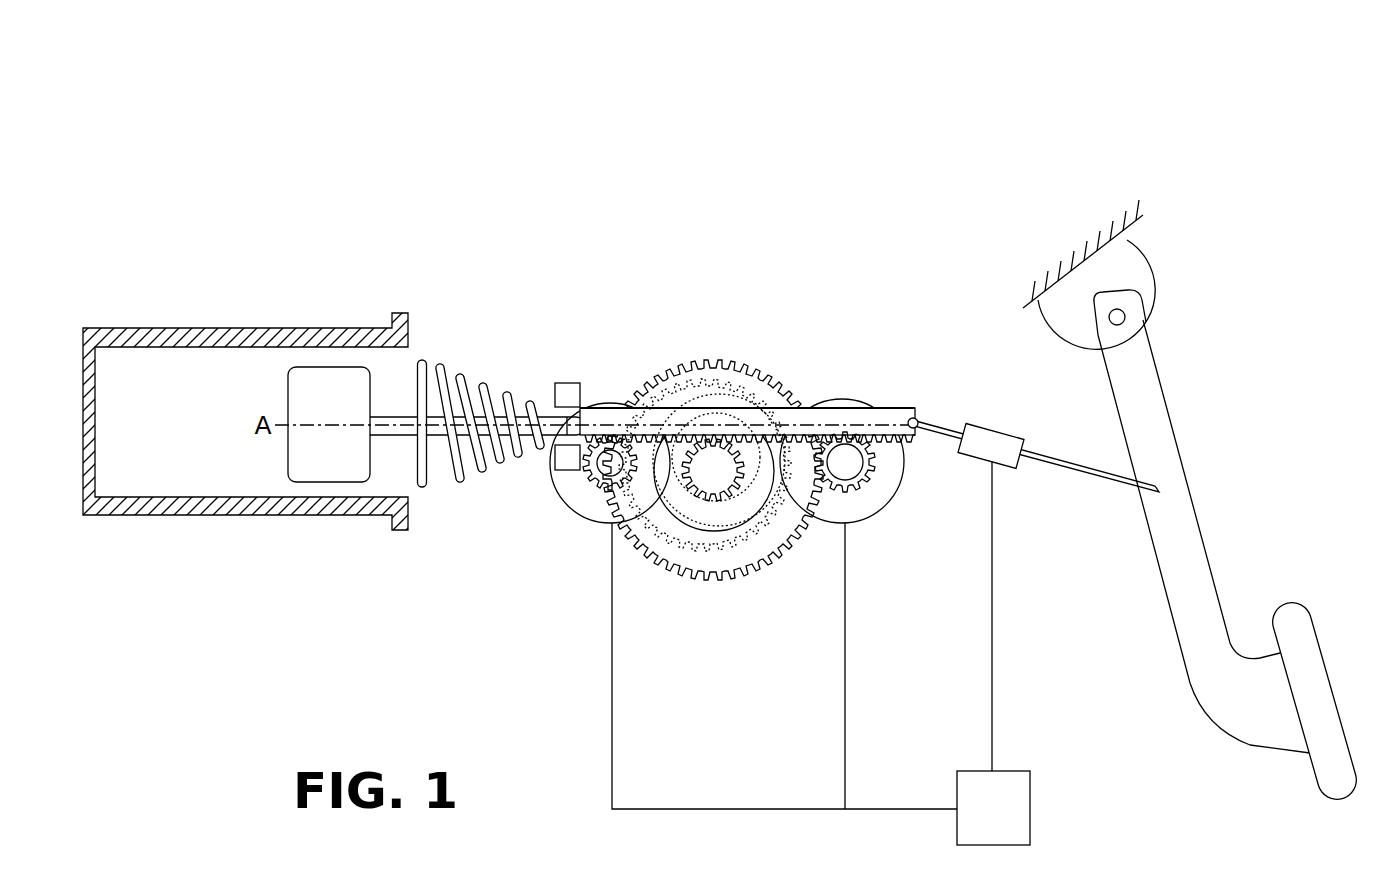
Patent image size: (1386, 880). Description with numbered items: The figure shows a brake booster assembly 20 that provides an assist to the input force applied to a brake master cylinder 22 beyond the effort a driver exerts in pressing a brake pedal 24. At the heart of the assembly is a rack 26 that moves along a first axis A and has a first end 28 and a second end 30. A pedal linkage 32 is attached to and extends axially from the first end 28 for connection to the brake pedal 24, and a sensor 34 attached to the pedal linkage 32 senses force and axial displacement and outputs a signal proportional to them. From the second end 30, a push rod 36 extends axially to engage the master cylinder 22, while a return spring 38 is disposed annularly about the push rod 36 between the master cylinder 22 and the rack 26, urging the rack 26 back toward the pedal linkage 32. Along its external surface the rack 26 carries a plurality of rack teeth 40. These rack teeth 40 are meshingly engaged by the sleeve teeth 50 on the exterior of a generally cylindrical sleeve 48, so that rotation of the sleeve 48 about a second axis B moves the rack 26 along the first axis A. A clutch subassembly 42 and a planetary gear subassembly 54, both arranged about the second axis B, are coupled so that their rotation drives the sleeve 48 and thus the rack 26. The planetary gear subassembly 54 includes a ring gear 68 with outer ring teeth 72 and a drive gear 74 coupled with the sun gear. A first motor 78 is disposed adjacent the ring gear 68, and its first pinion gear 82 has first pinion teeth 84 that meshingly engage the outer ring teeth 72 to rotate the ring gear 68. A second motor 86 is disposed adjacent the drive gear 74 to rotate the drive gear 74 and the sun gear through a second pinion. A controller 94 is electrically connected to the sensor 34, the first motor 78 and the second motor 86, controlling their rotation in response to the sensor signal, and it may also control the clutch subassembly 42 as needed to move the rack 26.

The brake booster assembly 20 is at (1010, 100).
The brake master cylinder 22 is at (303, 330).
The brake pedal 24 is at (1192, 568).
The rack 26 is at (898, 416).
The first end 28 is at (915, 429).
The second end 30 is at (568, 478).
The pedal linkage 32 is at (1082, 460).
The sensor 34 is at (1002, 440).
The push rod 36 is at (433, 433).
The return spring 38 is at (466, 370).
The rack teeth 40 is at (872, 430).
The clutch subassembly 42 is at (690, 530).
The sleeve 48 is at (713, 470).
The sleeve teeth 50 is at (727, 500).
The planetary gear subassembly 54 is at (614, 455).
The ring gear 68 is at (753, 550).
The outer ring teeth 72 is at (793, 548).
The drive gear 74 is at (638, 540).
The first motor 78 is at (867, 508).
The first pinion gear 82 is at (845, 462).
The first pinion teeth 84 is at (866, 474).
The second motor 86 is at (588, 508).
The controller 94 is at (993, 653).